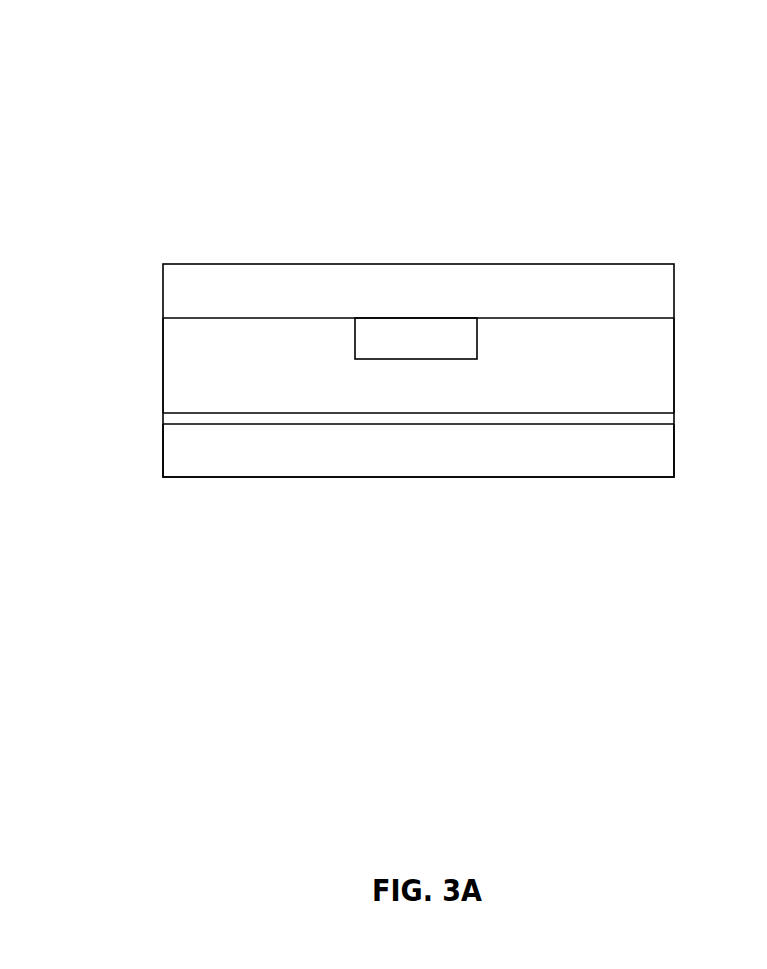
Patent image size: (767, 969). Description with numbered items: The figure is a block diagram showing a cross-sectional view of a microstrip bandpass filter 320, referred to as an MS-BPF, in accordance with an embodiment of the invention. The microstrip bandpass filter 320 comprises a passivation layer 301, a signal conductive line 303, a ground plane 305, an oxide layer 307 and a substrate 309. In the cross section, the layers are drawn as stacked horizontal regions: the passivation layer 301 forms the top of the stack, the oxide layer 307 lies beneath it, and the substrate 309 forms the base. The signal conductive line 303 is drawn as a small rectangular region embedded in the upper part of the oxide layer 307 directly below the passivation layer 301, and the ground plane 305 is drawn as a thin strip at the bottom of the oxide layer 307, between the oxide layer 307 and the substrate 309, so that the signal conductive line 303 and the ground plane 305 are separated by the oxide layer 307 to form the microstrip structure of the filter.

The microstrip bandpass filter 320 is at (180, 113).
The passivation layer 301 is at (418, 299).
The signal conductive line 303 is at (479, 335).
The ground plane 305 is at (675, 418).
The oxide layer 307 is at (303, 370).
The substrate 309 is at (335, 463).